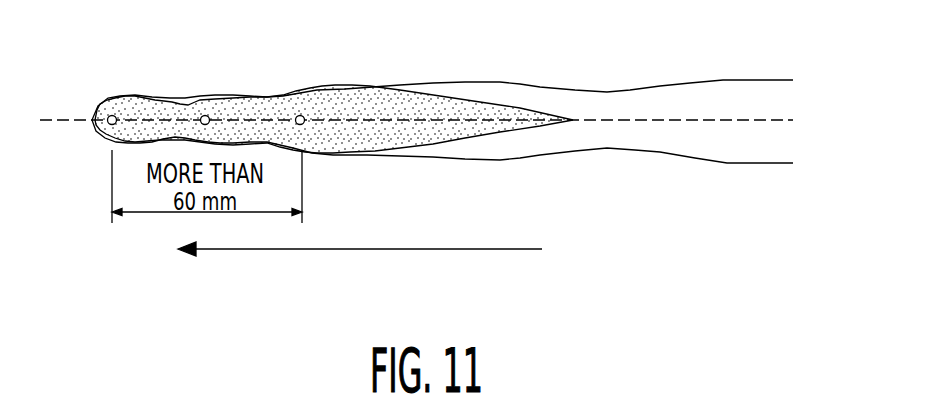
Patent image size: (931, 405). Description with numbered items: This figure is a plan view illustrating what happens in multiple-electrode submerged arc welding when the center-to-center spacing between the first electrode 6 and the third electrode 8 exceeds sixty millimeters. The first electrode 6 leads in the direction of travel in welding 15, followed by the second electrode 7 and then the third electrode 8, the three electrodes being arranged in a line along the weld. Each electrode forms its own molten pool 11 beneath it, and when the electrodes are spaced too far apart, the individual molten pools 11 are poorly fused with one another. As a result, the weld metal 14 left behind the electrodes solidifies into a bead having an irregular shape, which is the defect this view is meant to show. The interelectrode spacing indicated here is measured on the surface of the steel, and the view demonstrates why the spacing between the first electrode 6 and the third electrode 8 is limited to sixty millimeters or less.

The first electrode 6 is at (108, 115).
The second electrode 7 is at (200, 115).
The third electrode 8 is at (304, 115).
The molten pool 11 is at (441, 105).
The weld metal 14 is at (640, 120).
The direction of travel in welding 15 is at (293, 252).